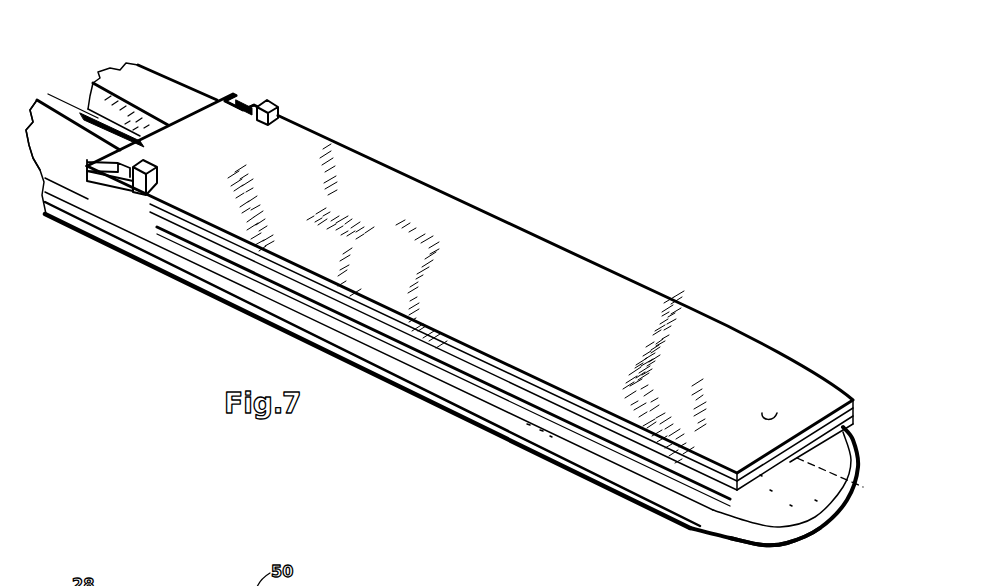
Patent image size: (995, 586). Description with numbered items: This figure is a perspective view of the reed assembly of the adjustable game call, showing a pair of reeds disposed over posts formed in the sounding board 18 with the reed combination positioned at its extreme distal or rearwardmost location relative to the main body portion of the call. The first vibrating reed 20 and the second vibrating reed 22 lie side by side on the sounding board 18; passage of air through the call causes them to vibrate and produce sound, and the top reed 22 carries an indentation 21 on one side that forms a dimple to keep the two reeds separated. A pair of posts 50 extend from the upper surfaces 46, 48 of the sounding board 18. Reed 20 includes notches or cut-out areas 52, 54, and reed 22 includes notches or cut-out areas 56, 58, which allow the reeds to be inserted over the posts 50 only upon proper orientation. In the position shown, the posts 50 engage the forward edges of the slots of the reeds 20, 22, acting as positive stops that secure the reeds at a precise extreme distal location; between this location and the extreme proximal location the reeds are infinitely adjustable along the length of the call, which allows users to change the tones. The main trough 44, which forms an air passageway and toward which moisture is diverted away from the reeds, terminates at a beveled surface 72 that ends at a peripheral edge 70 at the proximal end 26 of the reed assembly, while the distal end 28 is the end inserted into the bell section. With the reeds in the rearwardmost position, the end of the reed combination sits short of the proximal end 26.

The sounding board 18 is at (451, 343).
The first vibrating reed 20 is at (85, 187).
The indentation 21 is at (768, 410).
The second vibrating reed 22 is at (547, 323).
The proximal end 26 is at (774, 550).
The distal end 28 is at (121, 90).
The main trough 44 is at (124, 120).
The upper surface 46 is at (160, 104).
The upper surface 48 is at (71, 149).
The posts 50 is at (268, 99).
The notch 52 is at (104, 235).
The notch 54 is at (256, 63).
The notch 56 is at (123, 186).
The notch 58 is at (253, 100).
The peripheral edge 70 is at (812, 528).
The beveled surface 72 is at (809, 499).